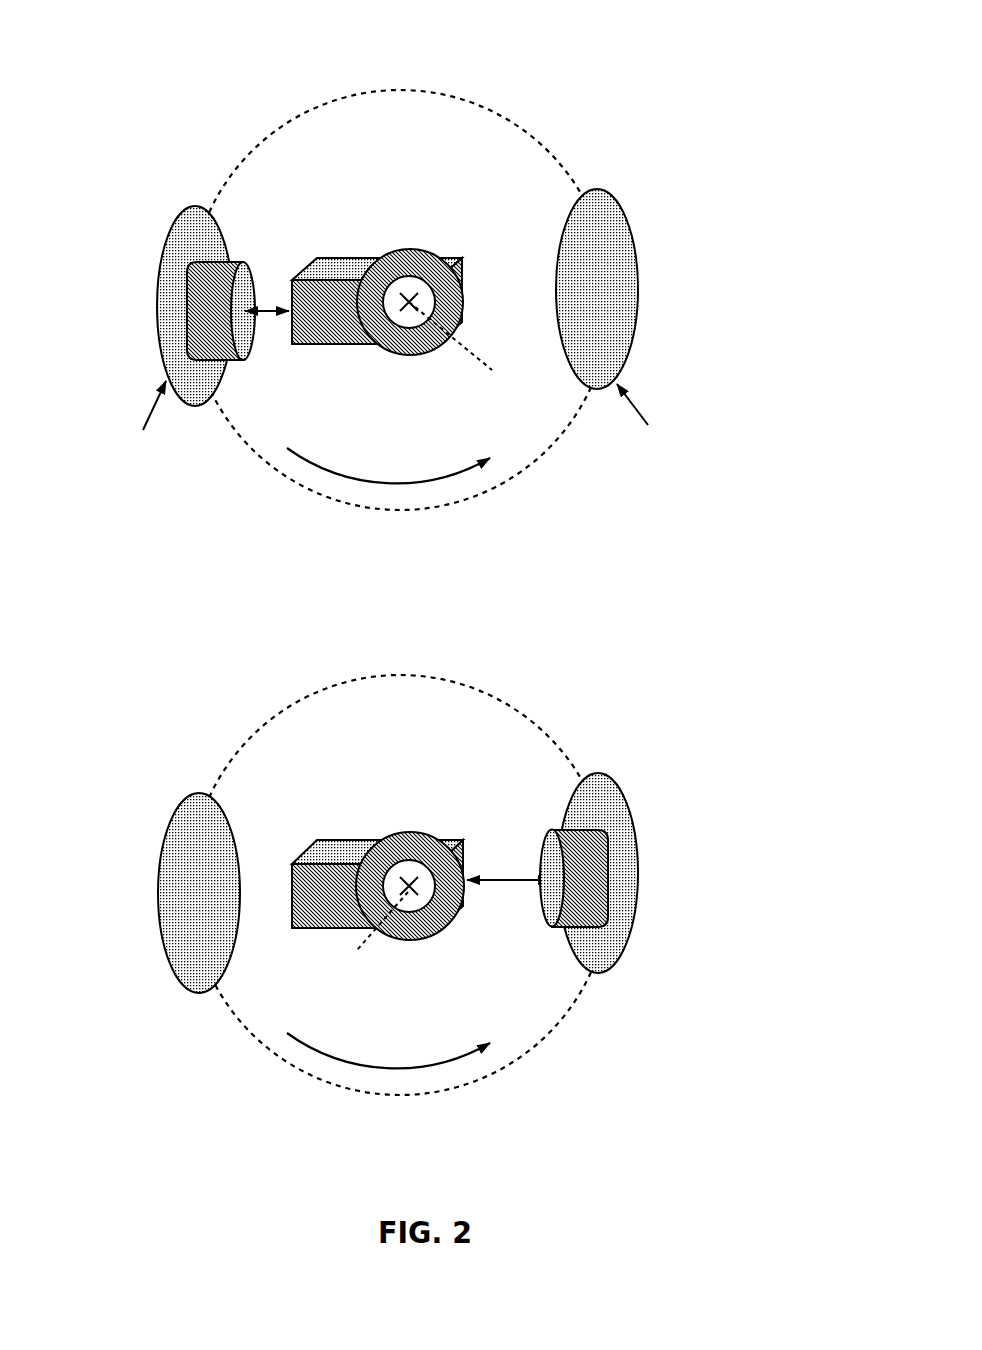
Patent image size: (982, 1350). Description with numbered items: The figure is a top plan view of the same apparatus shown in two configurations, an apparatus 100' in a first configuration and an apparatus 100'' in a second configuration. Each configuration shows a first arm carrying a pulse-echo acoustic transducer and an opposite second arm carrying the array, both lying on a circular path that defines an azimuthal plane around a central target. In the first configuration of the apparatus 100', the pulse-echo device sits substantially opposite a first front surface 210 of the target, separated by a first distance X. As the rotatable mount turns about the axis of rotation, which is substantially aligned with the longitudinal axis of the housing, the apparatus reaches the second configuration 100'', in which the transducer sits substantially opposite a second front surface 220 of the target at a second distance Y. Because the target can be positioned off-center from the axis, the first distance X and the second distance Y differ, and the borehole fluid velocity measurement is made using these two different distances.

The apparatus in a first configuration 100' is at (412, 261).
The apparatus in a second configuration 100'' is at (406, 859).
The first front surface 210 is at (301, 277).
The second front surface 220 is at (466, 866).
The first distance X is at (267, 289).
The second distance Y is at (509, 899).